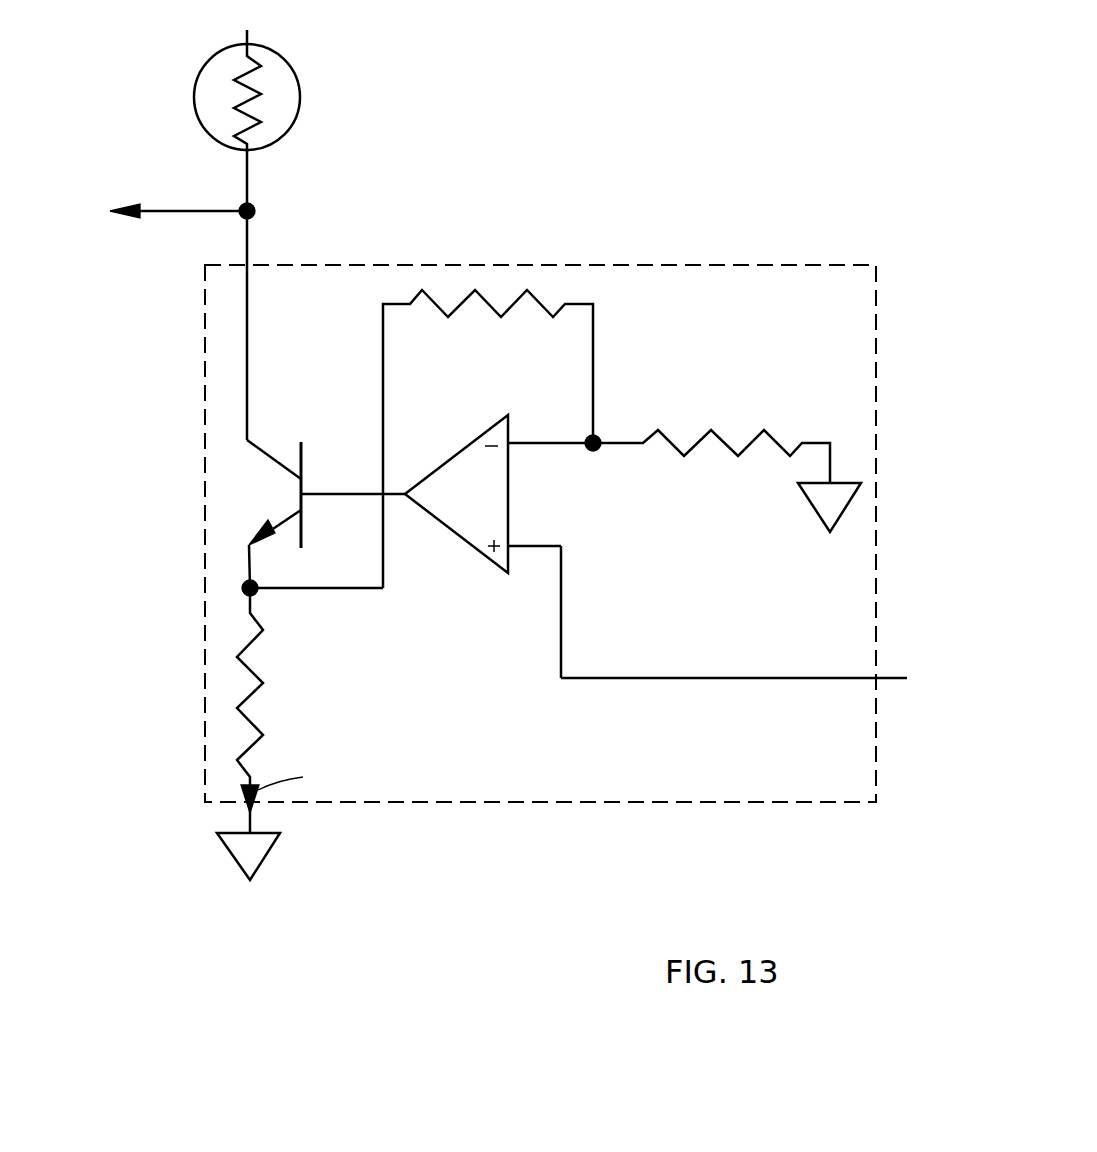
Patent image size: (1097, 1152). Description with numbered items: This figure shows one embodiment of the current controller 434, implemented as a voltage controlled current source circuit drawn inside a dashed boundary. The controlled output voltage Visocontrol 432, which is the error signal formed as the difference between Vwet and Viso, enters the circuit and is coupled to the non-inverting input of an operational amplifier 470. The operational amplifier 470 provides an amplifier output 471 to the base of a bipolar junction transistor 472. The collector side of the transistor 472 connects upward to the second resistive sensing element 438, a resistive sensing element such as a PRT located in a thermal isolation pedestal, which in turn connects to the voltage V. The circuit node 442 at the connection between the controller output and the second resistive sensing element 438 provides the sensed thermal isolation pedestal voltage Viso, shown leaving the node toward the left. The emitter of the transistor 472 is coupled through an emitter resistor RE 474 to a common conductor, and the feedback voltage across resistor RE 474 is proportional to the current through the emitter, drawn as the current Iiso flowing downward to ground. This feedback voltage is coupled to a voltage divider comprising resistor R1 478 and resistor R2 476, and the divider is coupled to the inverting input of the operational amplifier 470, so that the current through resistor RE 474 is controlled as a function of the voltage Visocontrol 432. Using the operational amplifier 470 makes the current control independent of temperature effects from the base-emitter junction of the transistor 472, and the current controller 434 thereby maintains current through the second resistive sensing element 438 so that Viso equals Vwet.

The second resistive sensing element 438 is at (298, 60).
The circuit node 442 is at (250, 204).
The resistor R2 476 is at (475, 290).
The resistor R1 478 is at (764, 430).
The bipolar junction transistor 472 is at (268, 450).
The amplifier output 471 is at (347, 492).
The operational amplifier 470 is at (450, 535).
The emitter resistor RE 474 is at (262, 733).
The controlled output voltage Visocontrol 432 is at (730, 678).
The current controller 434 is at (525, 805).